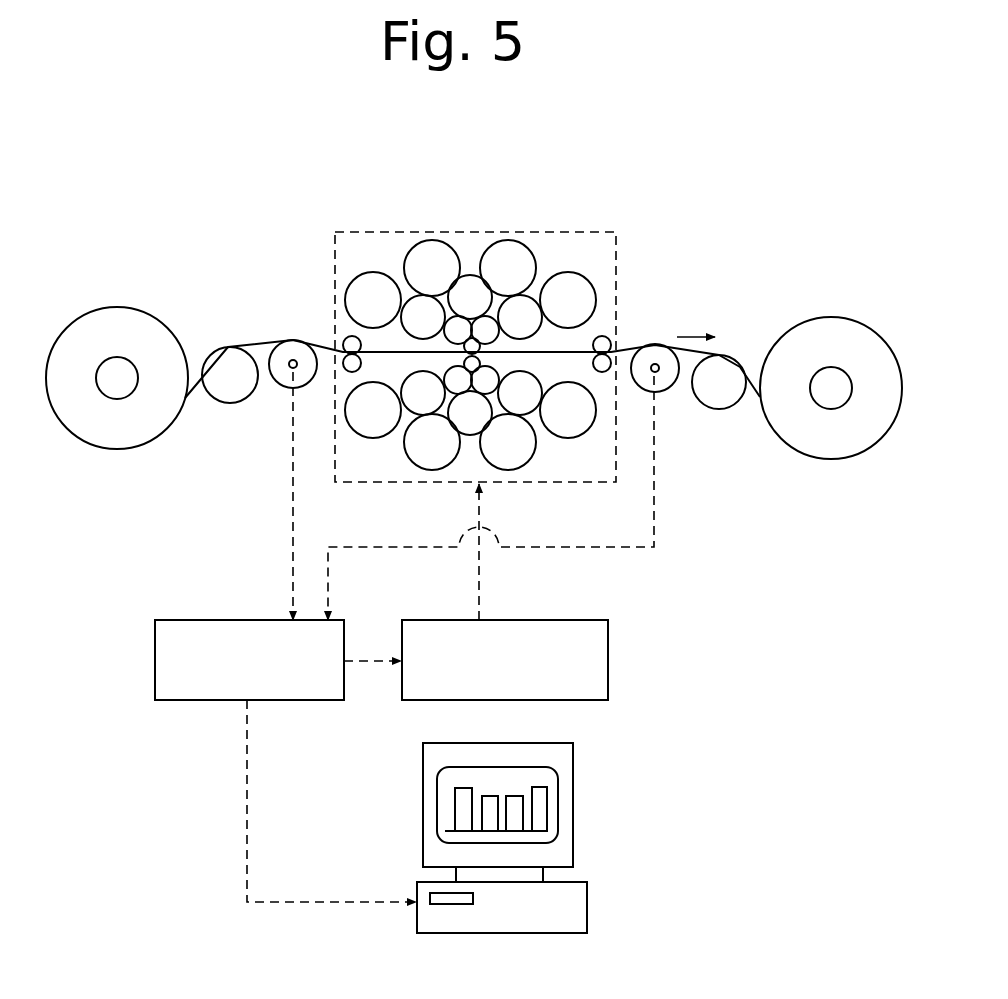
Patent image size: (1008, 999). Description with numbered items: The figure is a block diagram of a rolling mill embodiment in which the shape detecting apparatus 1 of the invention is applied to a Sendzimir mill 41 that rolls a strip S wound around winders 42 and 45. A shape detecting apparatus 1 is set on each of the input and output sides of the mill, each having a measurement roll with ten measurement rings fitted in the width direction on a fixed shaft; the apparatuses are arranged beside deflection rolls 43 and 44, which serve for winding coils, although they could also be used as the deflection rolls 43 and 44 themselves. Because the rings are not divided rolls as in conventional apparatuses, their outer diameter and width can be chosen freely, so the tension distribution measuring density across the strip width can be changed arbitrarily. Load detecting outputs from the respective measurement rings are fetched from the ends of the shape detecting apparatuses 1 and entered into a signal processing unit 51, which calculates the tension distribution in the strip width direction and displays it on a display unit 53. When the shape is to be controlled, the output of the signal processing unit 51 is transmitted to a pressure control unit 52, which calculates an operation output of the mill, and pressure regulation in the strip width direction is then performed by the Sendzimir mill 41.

The shape detecting apparatus 1 is at (297, 346).
The strip S is at (258, 343).
The Sendzimir mill 41 is at (555, 231).
The winder 42 is at (125, 442).
The deflection roll 43 is at (237, 392).
The deflection roll 44 is at (718, 400).
The winder 45 is at (840, 448).
The signal processing unit 51 is at (168, 653).
The pressure control unit 52 is at (596, 658).
The display unit 53 is at (563, 847).